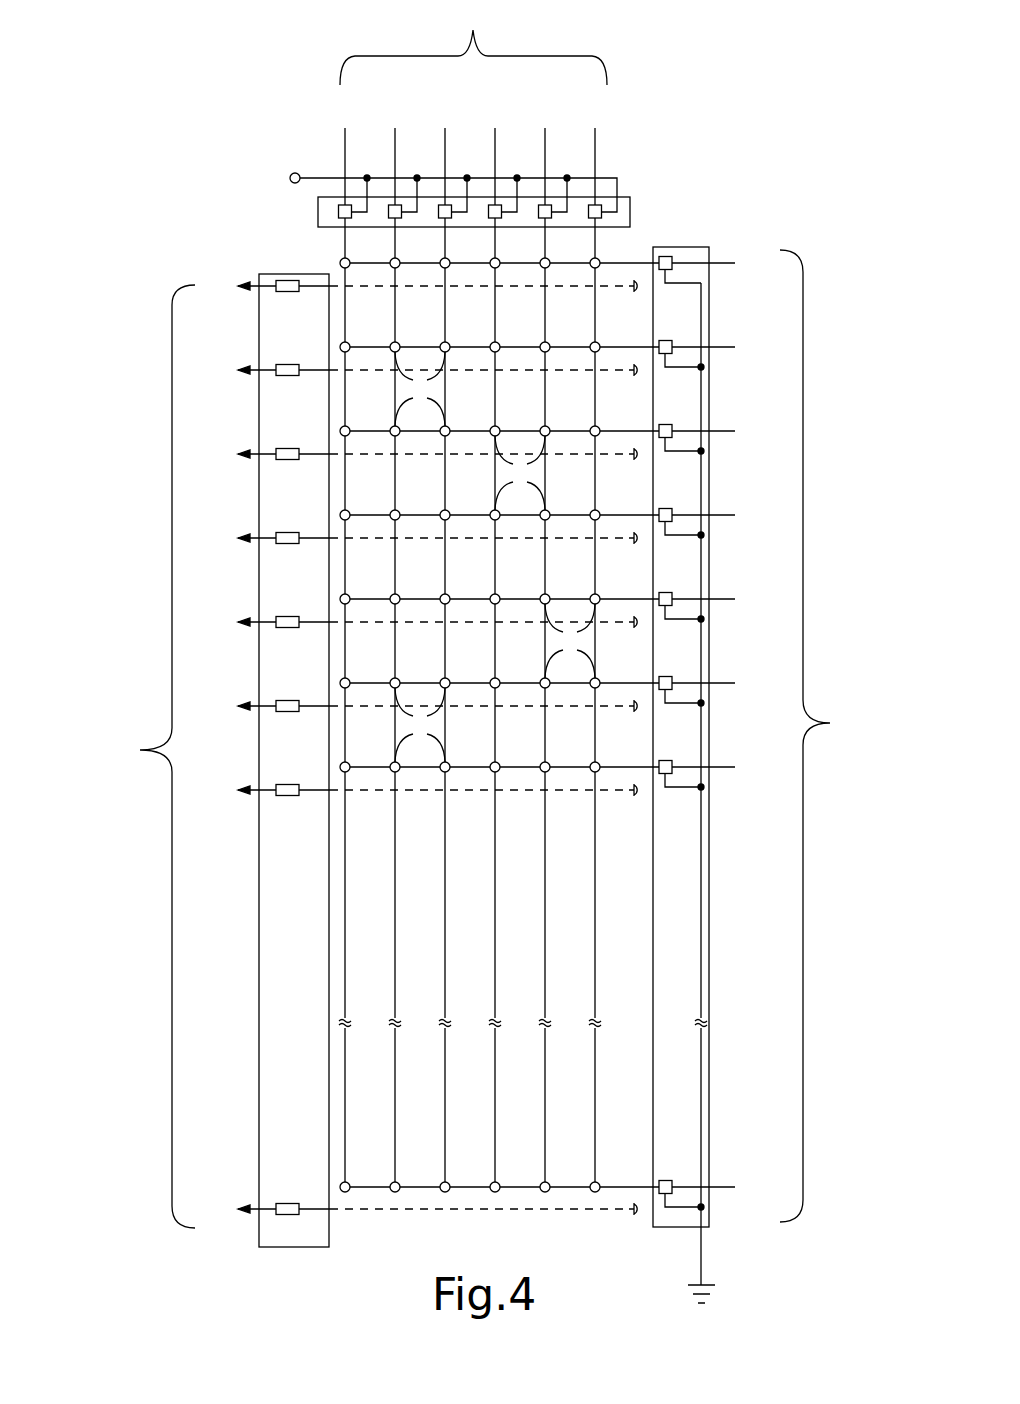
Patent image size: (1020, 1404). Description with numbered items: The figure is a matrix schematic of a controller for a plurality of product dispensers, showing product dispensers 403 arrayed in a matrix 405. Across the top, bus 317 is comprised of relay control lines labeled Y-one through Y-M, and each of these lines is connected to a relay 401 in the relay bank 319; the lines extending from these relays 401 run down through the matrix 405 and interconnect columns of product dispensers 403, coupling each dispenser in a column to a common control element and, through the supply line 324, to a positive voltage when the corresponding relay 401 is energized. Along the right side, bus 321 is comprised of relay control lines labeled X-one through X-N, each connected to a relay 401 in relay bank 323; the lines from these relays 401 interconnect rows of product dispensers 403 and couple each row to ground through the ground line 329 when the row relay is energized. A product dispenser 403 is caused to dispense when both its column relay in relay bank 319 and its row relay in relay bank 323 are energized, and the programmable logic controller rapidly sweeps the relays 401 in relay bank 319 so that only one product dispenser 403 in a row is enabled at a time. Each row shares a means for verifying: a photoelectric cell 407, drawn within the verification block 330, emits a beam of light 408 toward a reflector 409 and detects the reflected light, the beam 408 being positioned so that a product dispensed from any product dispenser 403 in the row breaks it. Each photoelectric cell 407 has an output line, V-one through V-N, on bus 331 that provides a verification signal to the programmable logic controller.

The bus 317 is at (473, 28).
The relay bank 319 is at (632, 212).
The bus 321 is at (830, 723).
The relay bank 323 is at (683, 247).
The +VDC supply line 324 is at (332, 178).
The ground line 329 is at (702, 1253).
The left resistor box 330 is at (259, 273).
The bus 331 is at (140, 750).
The relay 401 is at (337, 211).
The product dispenser 403 is at (495, 557).
The matrix 405 is at (385, 877).
The photoelectric cell 407 is at (288, 363).
The beam of light 408 is at (528, 290).
The reflector 409 is at (633, 291).